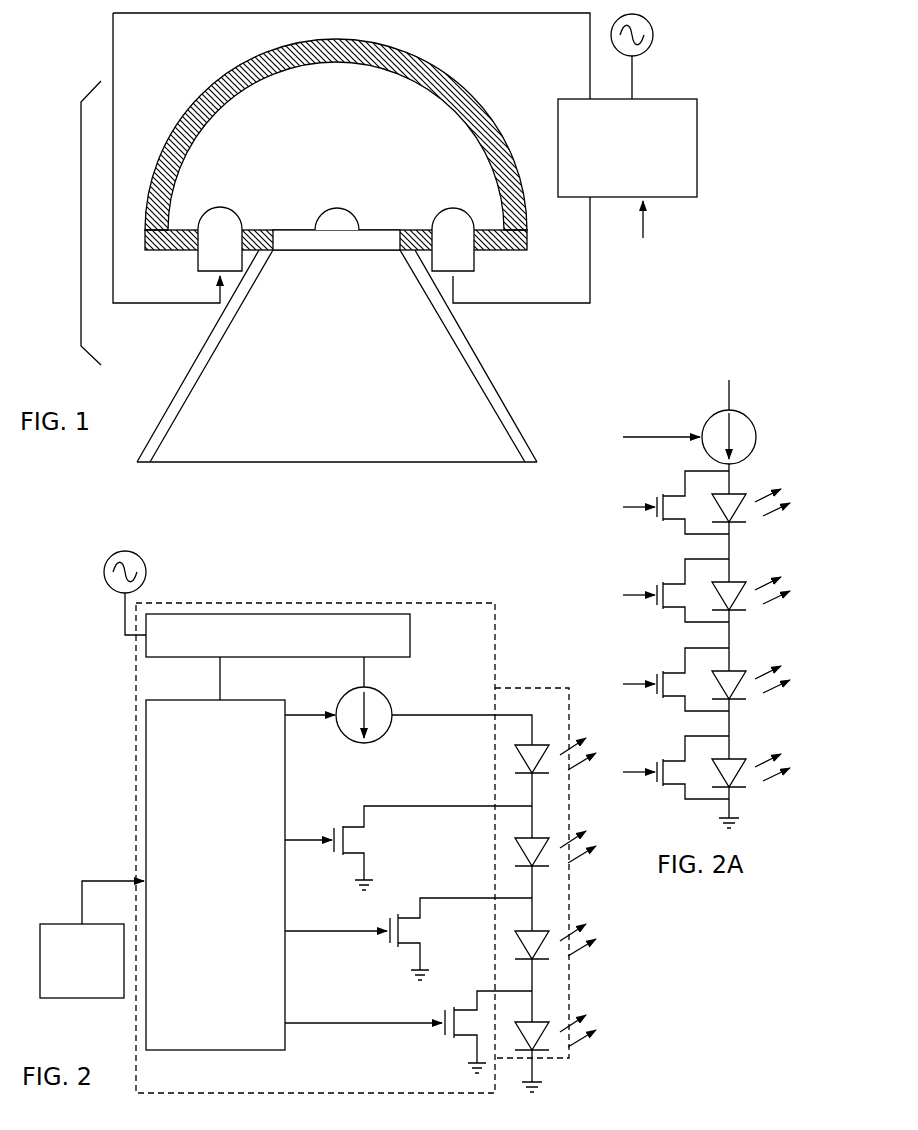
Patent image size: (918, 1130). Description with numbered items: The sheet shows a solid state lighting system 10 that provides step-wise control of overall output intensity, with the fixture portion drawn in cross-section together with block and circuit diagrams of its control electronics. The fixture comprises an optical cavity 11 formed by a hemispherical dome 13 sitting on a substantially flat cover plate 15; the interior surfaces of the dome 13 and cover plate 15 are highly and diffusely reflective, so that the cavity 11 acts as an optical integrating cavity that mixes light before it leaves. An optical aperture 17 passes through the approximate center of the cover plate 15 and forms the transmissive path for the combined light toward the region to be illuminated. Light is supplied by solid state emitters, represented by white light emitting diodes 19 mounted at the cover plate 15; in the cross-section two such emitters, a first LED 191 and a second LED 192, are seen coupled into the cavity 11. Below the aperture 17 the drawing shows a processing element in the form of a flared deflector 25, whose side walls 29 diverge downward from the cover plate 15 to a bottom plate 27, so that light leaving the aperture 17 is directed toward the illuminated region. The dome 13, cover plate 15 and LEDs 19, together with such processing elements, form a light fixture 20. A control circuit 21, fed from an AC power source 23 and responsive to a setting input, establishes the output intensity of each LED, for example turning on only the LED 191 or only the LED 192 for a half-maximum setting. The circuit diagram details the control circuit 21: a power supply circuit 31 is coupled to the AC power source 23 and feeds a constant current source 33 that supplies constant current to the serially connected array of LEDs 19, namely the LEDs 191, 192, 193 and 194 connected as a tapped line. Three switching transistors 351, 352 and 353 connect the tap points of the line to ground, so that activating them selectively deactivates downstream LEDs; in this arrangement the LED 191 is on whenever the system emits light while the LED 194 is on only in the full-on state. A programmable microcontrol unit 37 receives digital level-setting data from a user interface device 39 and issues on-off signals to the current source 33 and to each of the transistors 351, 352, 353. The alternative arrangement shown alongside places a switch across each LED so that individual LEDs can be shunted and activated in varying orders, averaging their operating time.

In FIG. 1, the solid state lighting system 10 is at (86, 43).
In FIG. 1, the optical cavity 11 is at (335, 137).
In FIG. 1, the hemispherical dome 13 is at (172, 118).
In FIG. 1, the cover plate 15 is at (187, 253).
In FIG. 1, the optical aperture 17 is at (380, 226).
In FIG. 2, the light emitting diodes 19 is at (539, 686).
In FIG. 1, the first LED 191 is at (215, 223).
In FIG. 2, the first LED 191 is at (555, 739).
In FIG. 1, the second LED 192 is at (459, 223).
In FIG. 2, the second LED 192 is at (555, 830).
In FIG. 2, the third LED 193 is at (555, 923).
In FIG. 2, the fourth LED 194 is at (555, 1015).
In FIG. 1, the light fixture 20 is at (81, 218).
In FIG. 1, the control circuit 21 is at (658, 98).
In FIG. 2, the control circuit 21 is at (135, 763).
In FIG. 1, the AC power source 23 is at (656, 33).
In FIG. 2, the AC power source 23 is at (101, 569).
In FIG. 1, the reflector / deflector 25 is at (366, 379).
In FIG. 1, the bottom plate 27 is at (307, 467).
In FIG. 1, the reflector side wall 29 is at (178, 413).
In FIG. 2, the power supply circuit 31 is at (414, 622).
In FIG. 2, the constant current source 33 is at (394, 697).
In FIG. 2, the first switching transistor 351 is at (408, 848).
In FIG. 2, the second switching transistor 352 is at (408, 940).
In FIG. 2, the third switching transistor 353 is at (408, 1034).
In FIG. 2, the microcontrol unit 37 is at (286, 793).
In FIG. 2, the user interface device 39 is at (70, 921).